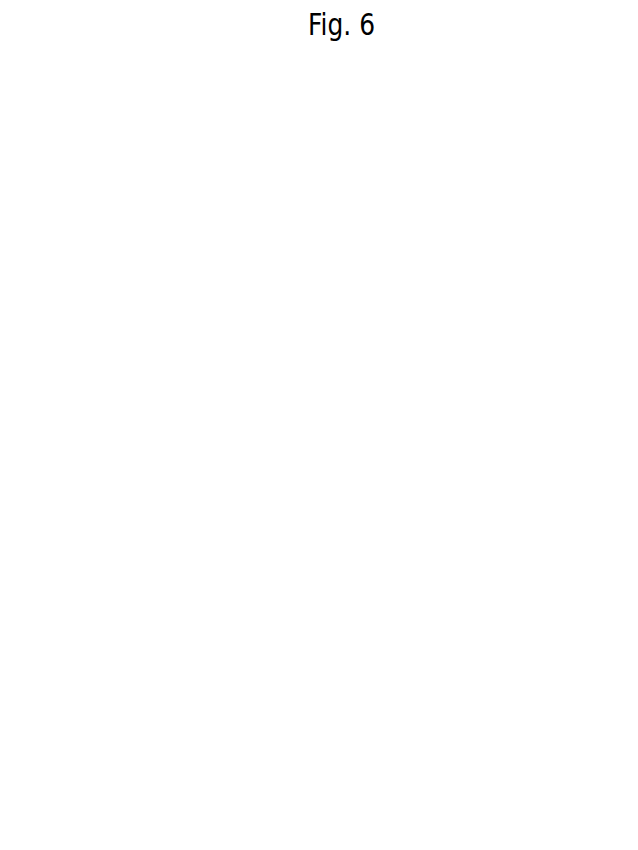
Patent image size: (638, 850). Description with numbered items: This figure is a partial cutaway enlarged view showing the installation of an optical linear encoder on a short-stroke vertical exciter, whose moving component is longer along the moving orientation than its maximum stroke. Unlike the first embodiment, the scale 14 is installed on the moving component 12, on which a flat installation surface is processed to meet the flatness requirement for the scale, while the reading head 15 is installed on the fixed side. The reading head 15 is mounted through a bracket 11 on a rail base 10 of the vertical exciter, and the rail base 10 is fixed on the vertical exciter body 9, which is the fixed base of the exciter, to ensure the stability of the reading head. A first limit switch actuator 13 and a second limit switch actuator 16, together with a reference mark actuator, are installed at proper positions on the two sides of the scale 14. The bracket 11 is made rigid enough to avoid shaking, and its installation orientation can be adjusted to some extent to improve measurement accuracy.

The vertical exciter body 9 is at (337, 634).
The rail base 10 is at (332, 412).
The bracket 11 is at (169, 409).
The moving component 12 is at (264, 385).
The first limit switch actuator 13 is at (380, 485).
The scale 14 is at (376, 486).
The reading head 15 is at (365, 533).
The second limit switch actuator 16 is at (379, 595).